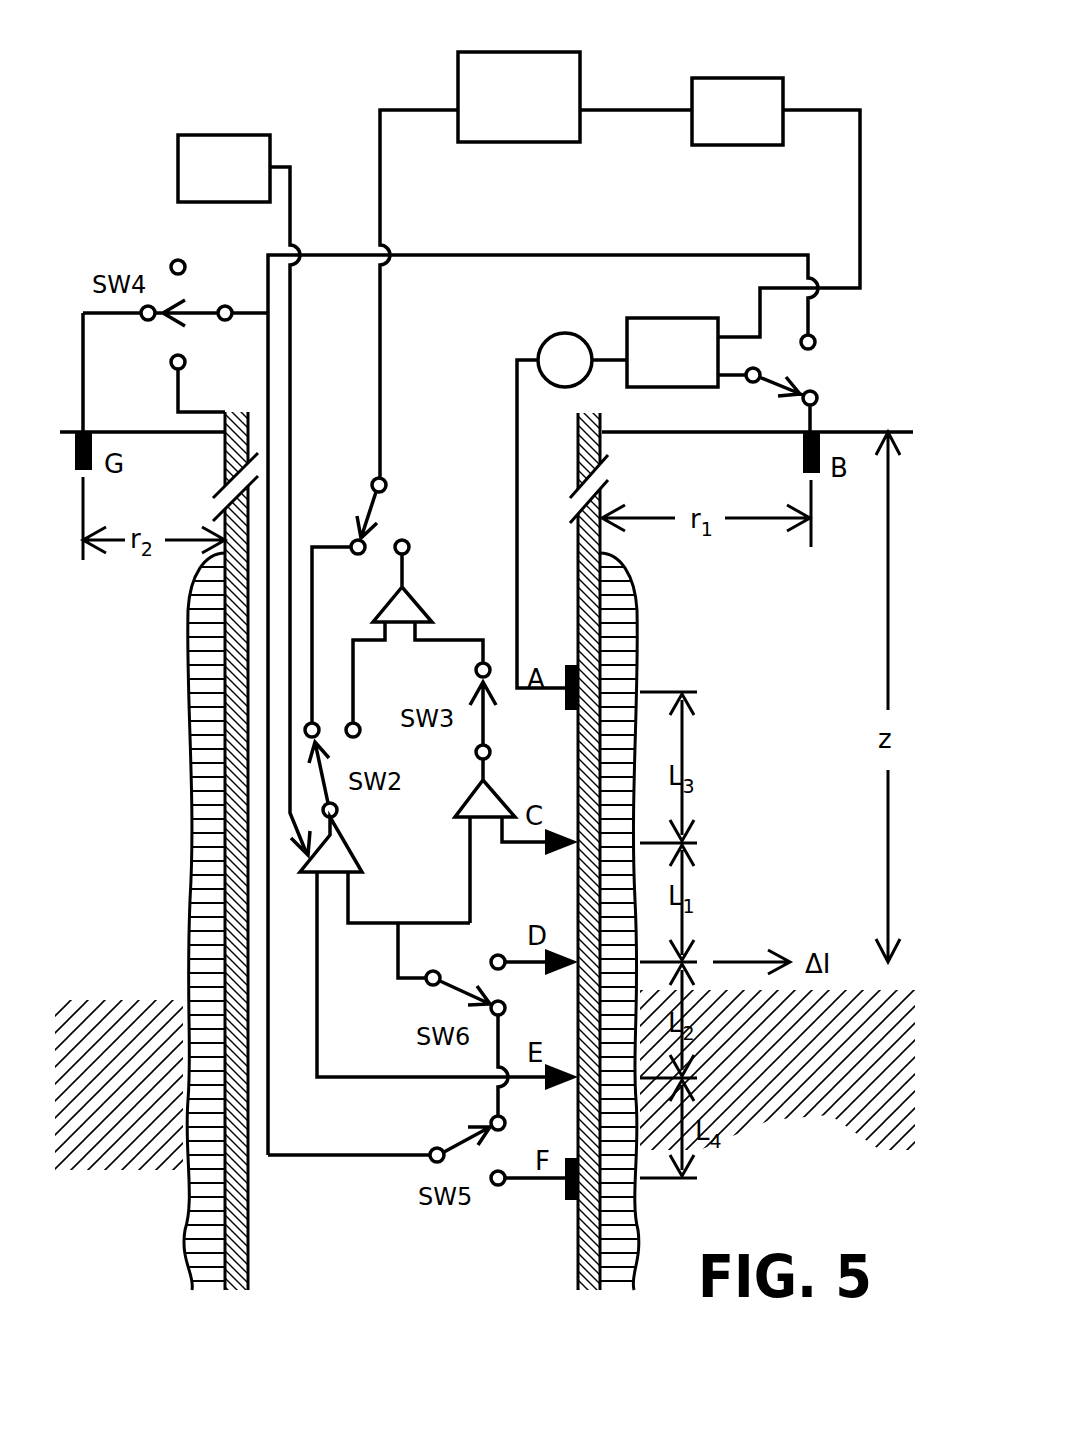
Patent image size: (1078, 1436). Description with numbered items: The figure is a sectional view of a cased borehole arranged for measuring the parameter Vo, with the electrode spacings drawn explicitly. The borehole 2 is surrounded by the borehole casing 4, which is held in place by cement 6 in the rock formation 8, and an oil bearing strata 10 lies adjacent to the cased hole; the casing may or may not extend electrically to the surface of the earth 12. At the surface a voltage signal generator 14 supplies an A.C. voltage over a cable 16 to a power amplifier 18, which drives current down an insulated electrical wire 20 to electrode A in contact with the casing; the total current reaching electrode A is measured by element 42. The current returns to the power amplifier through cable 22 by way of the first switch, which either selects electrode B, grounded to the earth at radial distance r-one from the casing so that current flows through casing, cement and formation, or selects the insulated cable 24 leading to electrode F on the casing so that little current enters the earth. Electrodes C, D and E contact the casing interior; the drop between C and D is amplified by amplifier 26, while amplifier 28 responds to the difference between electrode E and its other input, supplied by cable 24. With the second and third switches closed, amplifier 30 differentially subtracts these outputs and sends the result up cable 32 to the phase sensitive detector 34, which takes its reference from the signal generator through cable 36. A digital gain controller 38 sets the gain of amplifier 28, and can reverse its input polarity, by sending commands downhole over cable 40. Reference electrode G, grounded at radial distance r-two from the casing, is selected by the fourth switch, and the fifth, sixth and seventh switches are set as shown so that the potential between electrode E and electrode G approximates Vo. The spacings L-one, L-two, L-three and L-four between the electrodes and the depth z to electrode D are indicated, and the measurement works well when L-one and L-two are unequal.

The borehole 2 is at (358, 1190).
The borehole casing 4 is at (588, 1220).
The cement 6 is at (615, 1247).
The rock formation 8 is at (785, 1158).
The oil bearing strata 10 is at (868, 1100).
The surface of the earth 12 is at (638, 434).
The voltage signal generator 14 is at (757, 77).
The cable 16 is at (859, 228).
The power amplifier 18 is at (626, 340).
The insulated electrical wire 20 is at (517, 426).
The cable 22 is at (735, 378).
The insulated cable 24 is at (533, 256).
The amplifier 26 is at (470, 796).
The amplifier 28 is at (345, 853).
The amplifier 30 is at (422, 610).
The cable 32 is at (382, 380).
The phase sensitive detector 34 is at (457, 80).
The cable 36 is at (606, 109).
The digital gain controller 38 is at (271, 155).
The cable 40 is at (293, 346).
The current measuring element 42 is at (541, 346).